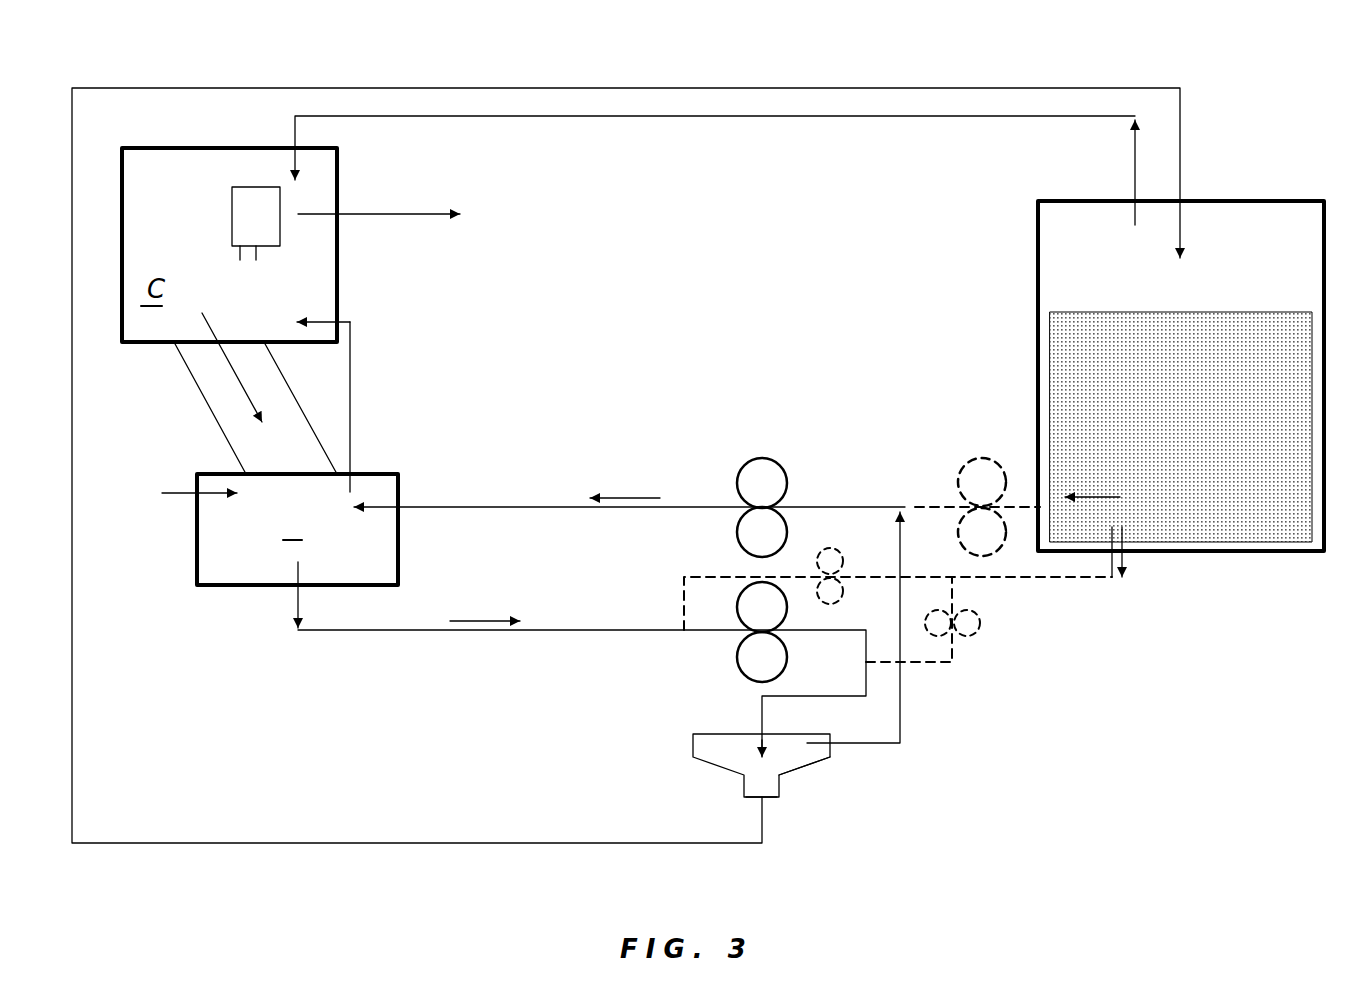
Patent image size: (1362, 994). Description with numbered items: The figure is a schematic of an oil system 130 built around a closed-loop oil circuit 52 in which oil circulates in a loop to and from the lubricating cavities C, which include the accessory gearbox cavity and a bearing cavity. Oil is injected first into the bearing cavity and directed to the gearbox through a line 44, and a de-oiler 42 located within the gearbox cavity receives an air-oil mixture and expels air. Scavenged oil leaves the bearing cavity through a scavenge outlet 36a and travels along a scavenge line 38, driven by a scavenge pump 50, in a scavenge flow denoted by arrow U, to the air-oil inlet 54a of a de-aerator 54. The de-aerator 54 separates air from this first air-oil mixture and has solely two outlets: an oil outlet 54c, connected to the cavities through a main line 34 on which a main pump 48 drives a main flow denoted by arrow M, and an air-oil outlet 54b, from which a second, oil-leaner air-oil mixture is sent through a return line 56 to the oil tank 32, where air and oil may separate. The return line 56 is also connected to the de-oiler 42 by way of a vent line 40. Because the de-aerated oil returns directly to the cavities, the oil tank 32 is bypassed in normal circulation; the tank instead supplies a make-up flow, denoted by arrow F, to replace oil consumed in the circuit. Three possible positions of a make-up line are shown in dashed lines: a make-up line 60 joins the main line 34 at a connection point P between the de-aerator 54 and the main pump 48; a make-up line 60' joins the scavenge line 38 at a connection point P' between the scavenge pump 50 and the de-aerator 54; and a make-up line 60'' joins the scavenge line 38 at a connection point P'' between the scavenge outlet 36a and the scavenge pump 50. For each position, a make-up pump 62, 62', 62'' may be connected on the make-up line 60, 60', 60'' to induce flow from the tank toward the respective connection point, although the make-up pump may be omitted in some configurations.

The oil system 130 is at (1248, 115).
The return line 56 is at (703, 88).
The vent line 40 is at (773, 117).
The de-oiler 42 is at (268, 248).
The line 44 is at (350, 395).
The scavenge outlet 36a is at (282, 602).
The scavenge line 38 is at (375, 632).
The main line 34 is at (540, 512).
The main pump 48 is at (728, 480).
The scavenge pump 50 is at (735, 638).
The closed-loop oil circuit 52 is at (510, 675).
The de-aerator 54 is at (721, 803).
The air-oil inlet 54a is at (755, 735).
The air-oil outlet 54b is at (770, 803).
The oil outlet 54c is at (840, 758).
The oil tank 32 is at (1038, 252).
The make-up line 60 is at (977, 446).
The make-up pump 62 is at (971, 457).
The make-up line 60' is at (967, 619).
The make-up pump 62' is at (1003, 641).
The make-up line 60'' is at (858, 578).
The make-up pump 62'' is at (828, 496).
The main flow of oil M is at (630, 495).
The scavenge flow of oil U is at (482, 620).
The connection point P is at (875, 459).
The connection point P' is at (828, 669).
The connection point P'' is at (626, 651).
The make-up flow of oil F is at (1112, 490).